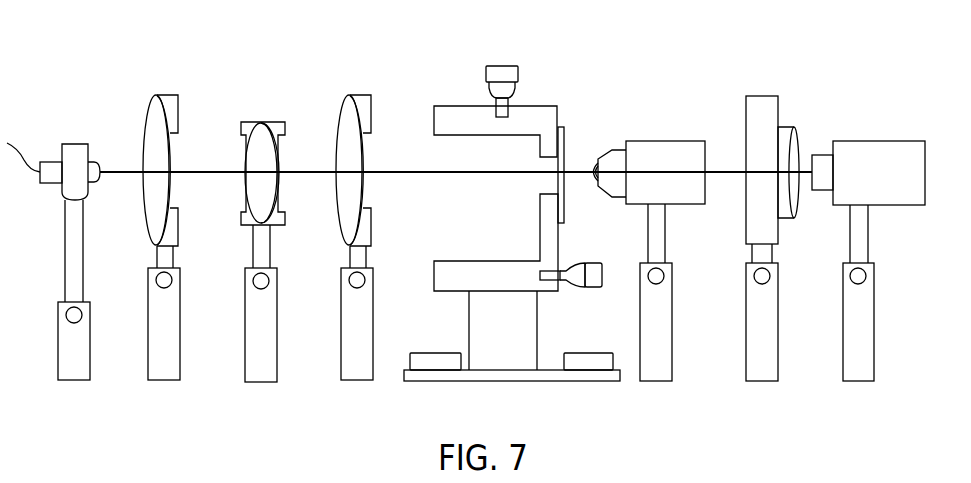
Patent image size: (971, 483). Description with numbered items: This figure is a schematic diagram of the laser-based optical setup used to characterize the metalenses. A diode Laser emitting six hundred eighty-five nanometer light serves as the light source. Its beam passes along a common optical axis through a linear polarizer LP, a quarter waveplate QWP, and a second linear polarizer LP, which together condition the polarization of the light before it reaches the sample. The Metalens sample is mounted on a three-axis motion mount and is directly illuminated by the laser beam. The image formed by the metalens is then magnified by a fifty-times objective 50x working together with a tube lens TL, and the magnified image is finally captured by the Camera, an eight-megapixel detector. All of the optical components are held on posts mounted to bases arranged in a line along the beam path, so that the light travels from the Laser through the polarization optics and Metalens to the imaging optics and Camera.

The diode laser Laser is at (55, 204).
The linear polarizer LP is at (258, 204).
The quarter waveplate QWP is at (259, 205).
The metalens sample Metalens is at (512, 204).
The 50× objective 50x is at (650, 261).
The tube lens TL is at (772, 204).
The camera Camera is at (868, 261).